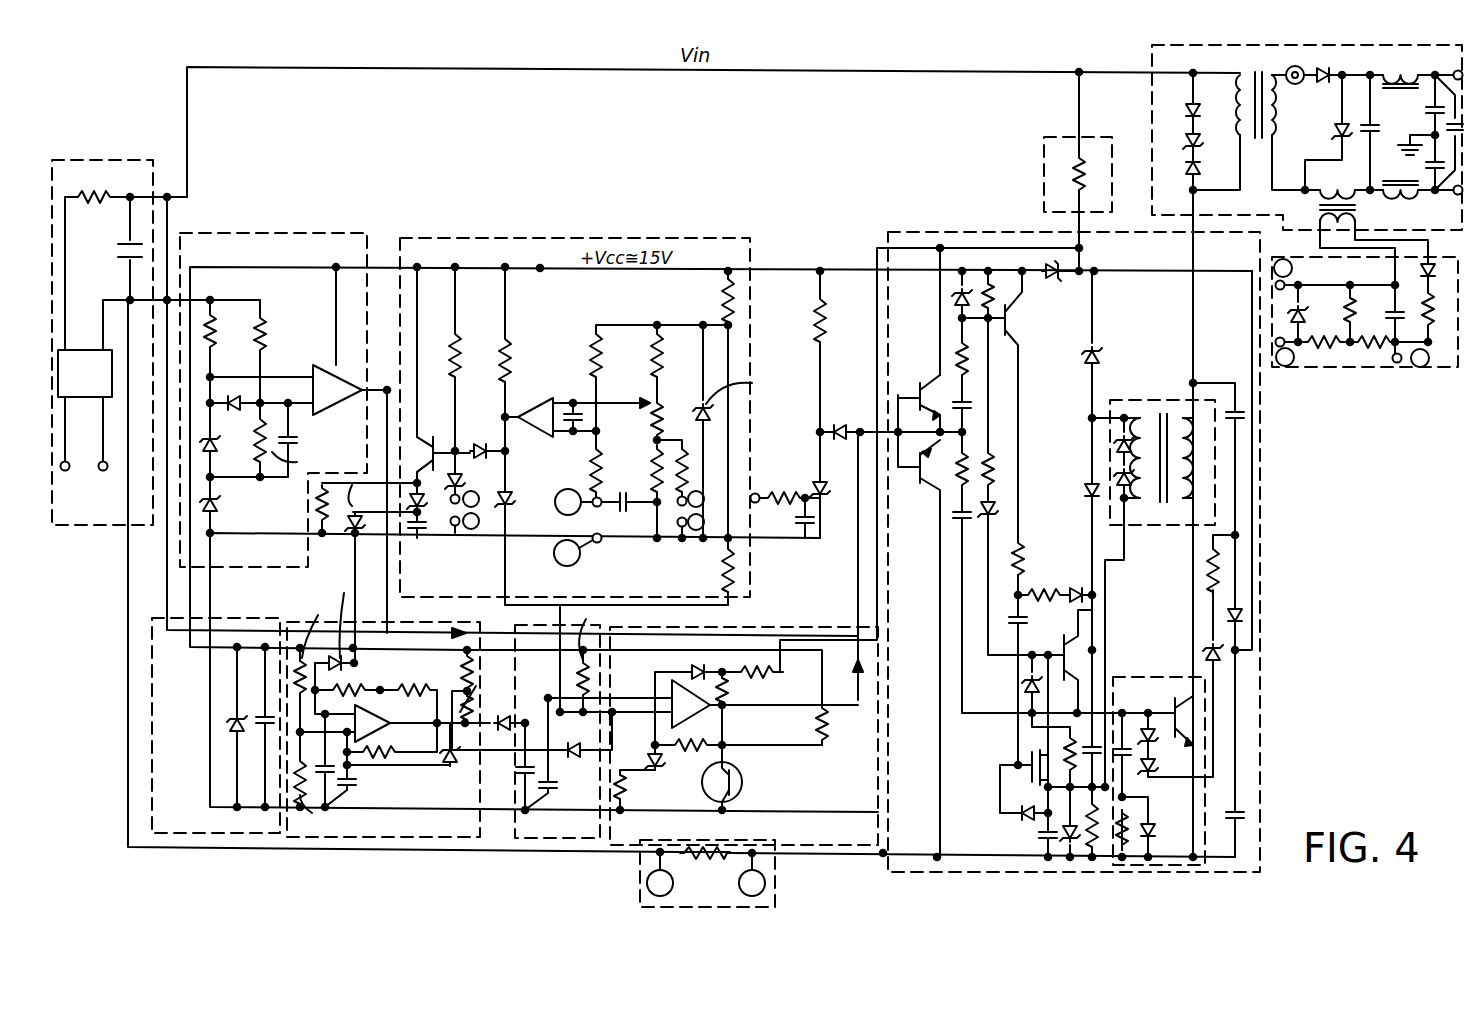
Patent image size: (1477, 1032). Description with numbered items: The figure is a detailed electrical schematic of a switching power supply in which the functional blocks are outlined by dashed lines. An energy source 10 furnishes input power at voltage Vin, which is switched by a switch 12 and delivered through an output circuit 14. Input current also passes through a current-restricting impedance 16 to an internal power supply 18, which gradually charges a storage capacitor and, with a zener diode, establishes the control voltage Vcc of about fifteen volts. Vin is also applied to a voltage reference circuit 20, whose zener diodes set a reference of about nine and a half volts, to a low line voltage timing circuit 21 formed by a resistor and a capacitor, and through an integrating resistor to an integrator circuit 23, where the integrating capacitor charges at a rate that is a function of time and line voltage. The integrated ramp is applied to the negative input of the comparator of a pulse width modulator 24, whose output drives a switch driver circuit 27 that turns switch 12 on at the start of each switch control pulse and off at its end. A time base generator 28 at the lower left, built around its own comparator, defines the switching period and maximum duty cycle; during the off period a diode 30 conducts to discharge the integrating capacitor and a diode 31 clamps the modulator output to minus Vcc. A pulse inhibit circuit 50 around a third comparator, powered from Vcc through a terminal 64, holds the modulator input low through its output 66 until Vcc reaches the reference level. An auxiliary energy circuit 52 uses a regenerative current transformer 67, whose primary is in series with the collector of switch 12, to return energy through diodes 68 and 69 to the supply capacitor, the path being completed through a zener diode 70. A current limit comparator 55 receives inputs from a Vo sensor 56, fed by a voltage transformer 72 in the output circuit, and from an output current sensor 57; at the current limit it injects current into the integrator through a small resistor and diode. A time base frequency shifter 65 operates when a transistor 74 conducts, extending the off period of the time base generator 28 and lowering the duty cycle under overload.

The energy source 10 is at (137, 168).
The switch 12 is at (1167, 677).
The output circuit 14 is at (1309, 209).
The current-restricting impedance 16 is at (1043, 140).
The internal power supply 18 is at (279, 836).
The voltage reference circuit 20 is at (344, 428).
The low line voltage timing circuit 21 is at (344, 428).
The pulse inhibit circuit 50 is at (344, 428).
The integrator circuit 23 is at (581, 748).
The pulse width modulator 24 is at (806, 842).
The switch driver circuit 27 is at (1049, 484).
The time base generator 28 is at (449, 750).
The diode 30 is at (515, 710).
The diode 31 is at (576, 748).
The auxiliary energy circuit 52 is at (1162, 426).
The current limit comparator 55 is at (680, 397).
The time base frequency shifter 65 is at (455, 240).
The Vo sensor 56 is at (1292, 368).
The output current sensor 57 is at (640, 908).
The terminal 64 is at (334, 270).
The output 66 is at (387, 390).
The regenerative current transformer 67 is at (1165, 498).
The diode 68 is at (1090, 355).
The diode 69 is at (1055, 280).
The zener diode 70 is at (1074, 850).
The voltage transformer 72 is at (1318, 203).
The transistor 74 is at (435, 440).